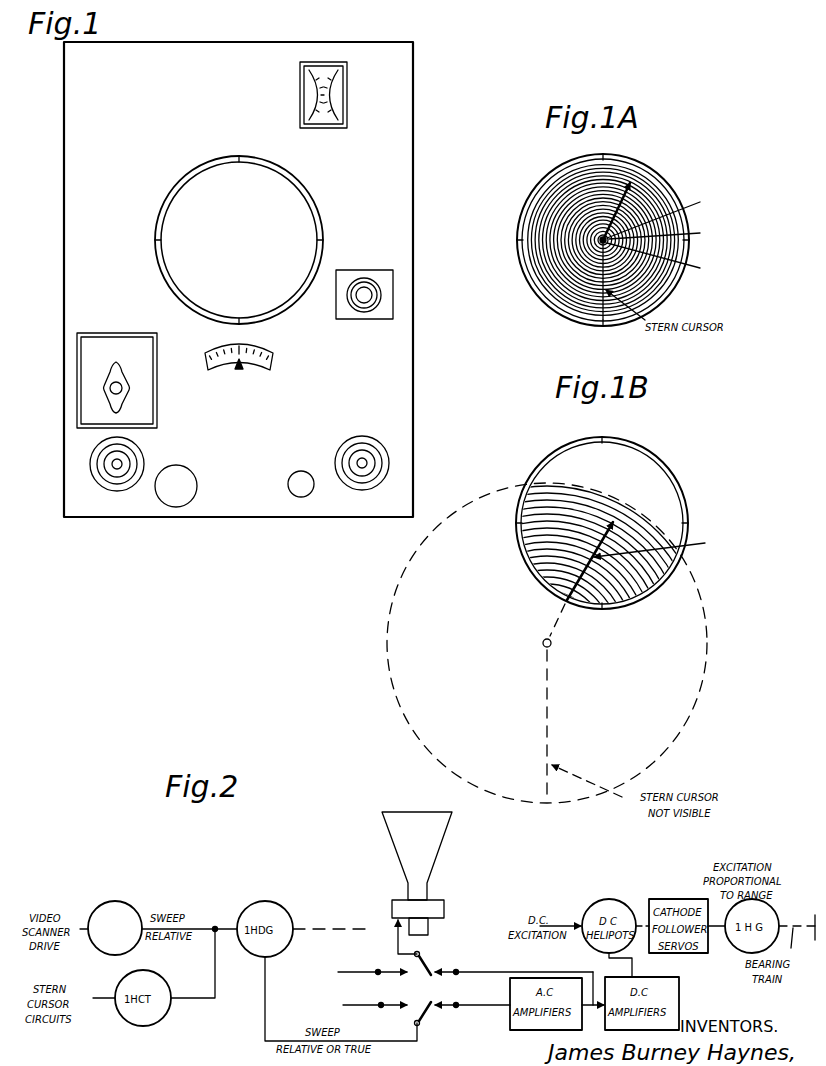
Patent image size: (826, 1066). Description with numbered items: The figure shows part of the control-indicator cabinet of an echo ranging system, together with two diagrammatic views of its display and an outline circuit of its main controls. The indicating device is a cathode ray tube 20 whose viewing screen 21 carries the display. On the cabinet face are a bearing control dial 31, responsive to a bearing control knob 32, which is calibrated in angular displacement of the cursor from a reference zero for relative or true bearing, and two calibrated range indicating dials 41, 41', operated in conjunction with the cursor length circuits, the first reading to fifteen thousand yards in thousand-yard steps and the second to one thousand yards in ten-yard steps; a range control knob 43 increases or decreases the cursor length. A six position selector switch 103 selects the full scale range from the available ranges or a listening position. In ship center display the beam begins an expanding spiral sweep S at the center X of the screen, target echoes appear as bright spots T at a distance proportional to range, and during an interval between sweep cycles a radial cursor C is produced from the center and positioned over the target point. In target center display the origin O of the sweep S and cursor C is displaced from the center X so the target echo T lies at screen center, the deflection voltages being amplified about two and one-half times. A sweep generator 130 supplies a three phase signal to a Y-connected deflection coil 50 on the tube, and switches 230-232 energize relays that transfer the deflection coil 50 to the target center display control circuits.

In FIG. 1, the cathode ray tube 20 is at (174, 177).
In FIG. 1A, the cathode ray tube 20 is at (539, 178).
In FIG. 1B, the cathode ray tube 20 is at (552, 443).
In FIG. 2, the cathode ray tube 20 is at (380, 818).
In FIG. 1, the viewing screen 21 is at (272, 193).
In FIG. 1A, the viewing screen 21 is at (540, 210).
In FIG. 1B, the viewing screen 21 is at (563, 469).
In FIG. 1, the range indicating dial 41 is at (296, 95).
In FIG. 1, the range indicating dial 41' is at (358, 95).
In FIG. 1, the bearing control dial 31 is at (273, 360).
In FIG. 1, the bearing control knob 32 is at (392, 448).
In FIG. 1, the range control knob 43 is at (89, 450).
In FIG. 1, the selector switch 103 is at (84, 356).
In FIG. 2, the sweep generator 130 is at (112, 903).
In FIG. 1, the switches 230-232 is at (381, 298).
In FIG. 2, the switches 230-232 is at (465, 989).
In FIG. 2, the deflection coil 50 is at (437, 908).
In FIG. 1A, the spiral sweep S is at (560, 262).
In FIG. 1B, the spiral sweep S is at (535, 500).
In FIG. 1A, the target echo T is at (632, 180).
In FIG. 1B, the target echo T is at (616, 520).
In FIG. 1A, the cursor C is at (664, 213).
In FIG. 1B, the cursor C is at (659, 545).
In FIG. 1A, the center of the screen X is at (670, 234).
In FIG. 1A, the origin O is at (660, 259).
In FIG. 1B, the origin O is at (551, 650).